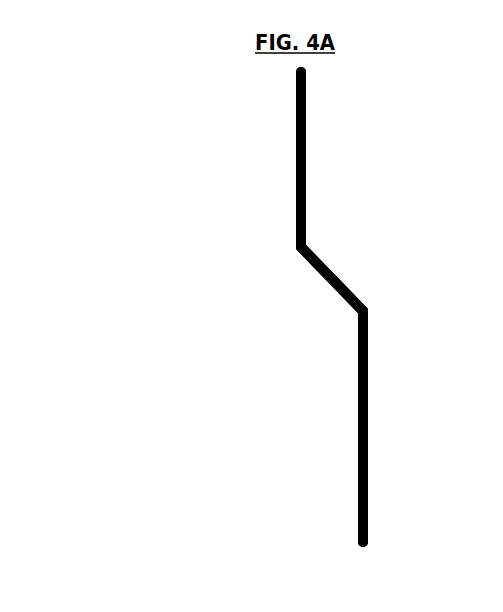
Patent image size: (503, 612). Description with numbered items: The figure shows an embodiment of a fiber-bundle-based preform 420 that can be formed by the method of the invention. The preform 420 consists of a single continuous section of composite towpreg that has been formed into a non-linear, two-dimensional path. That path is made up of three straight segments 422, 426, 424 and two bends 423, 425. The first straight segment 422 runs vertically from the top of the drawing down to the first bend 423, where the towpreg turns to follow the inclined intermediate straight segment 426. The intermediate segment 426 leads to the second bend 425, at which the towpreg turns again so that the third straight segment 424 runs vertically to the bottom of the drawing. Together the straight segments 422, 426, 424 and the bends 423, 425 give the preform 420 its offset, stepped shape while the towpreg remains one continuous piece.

The fiber-bundle-based preform 420 is at (245, 381).
The straight segment 422 is at (297, 153).
The bend 423 is at (306, 245).
The straight segment 424 is at (358, 431).
The bend 425 is at (367, 311).
The straight segment 426 is at (332, 283).